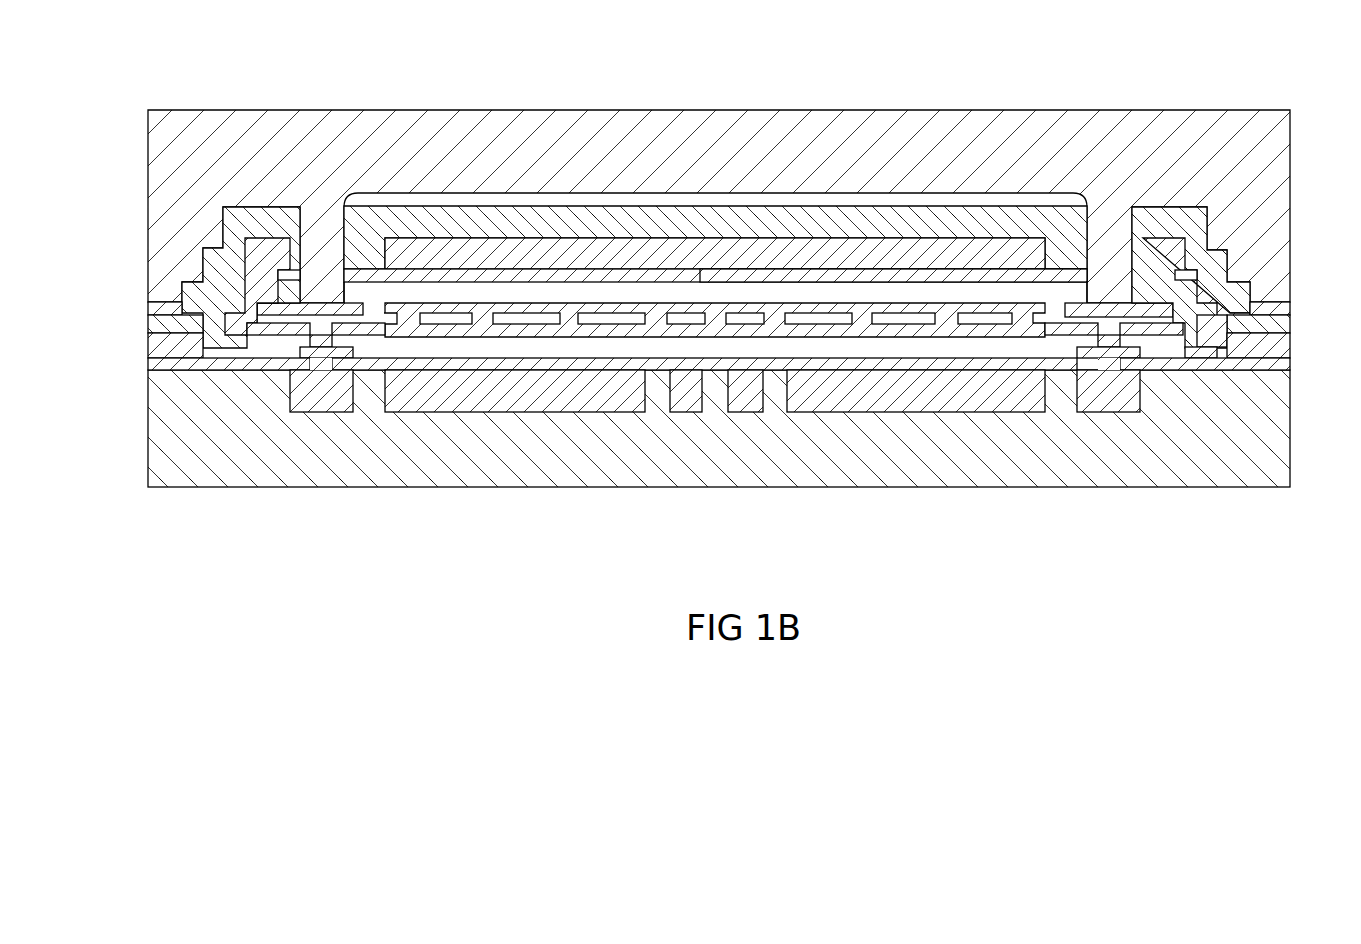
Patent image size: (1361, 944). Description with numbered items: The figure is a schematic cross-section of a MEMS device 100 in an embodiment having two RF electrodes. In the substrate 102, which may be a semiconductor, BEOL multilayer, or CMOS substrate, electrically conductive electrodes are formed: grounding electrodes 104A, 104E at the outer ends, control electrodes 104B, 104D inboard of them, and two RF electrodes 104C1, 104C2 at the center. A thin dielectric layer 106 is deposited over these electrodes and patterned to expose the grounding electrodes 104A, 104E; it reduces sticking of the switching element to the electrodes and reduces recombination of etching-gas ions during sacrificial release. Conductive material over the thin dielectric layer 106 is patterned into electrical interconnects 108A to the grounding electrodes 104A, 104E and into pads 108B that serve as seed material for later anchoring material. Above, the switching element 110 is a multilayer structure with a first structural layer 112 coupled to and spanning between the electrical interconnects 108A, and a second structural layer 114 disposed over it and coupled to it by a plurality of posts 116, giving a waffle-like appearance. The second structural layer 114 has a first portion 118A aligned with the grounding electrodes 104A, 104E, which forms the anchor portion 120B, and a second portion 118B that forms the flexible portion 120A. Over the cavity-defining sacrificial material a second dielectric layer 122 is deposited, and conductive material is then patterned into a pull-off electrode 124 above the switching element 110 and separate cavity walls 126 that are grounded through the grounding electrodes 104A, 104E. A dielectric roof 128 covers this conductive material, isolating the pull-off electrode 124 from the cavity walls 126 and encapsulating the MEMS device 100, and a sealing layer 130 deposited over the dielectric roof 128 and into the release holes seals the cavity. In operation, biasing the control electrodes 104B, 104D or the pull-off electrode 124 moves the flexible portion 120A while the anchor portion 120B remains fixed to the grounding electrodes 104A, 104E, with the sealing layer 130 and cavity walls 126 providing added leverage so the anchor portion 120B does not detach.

The MEMS device 100 is at (130, 103).
The substrate 102 is at (742, 459).
The grounding electrode 104A is at (335, 413).
The control electrode 104B is at (530, 414).
The RF electrode 104C1 is at (688, 413).
The RF electrode 104C2 is at (760, 413).
The control electrode 104D is at (965, 413).
The grounding electrode 104E is at (1110, 413).
The thin dielectric layer 106 is at (150, 366).
The electrical interconnect 108A is at (298, 352).
The pad 108B is at (207, 353).
The switching element 110 is at (750, 298).
The first structural layer 112 is at (830, 330).
The second structural layer 114 is at (568, 304).
The post 116 is at (570, 320).
The first portion 118A is at (345, 300).
The second portion 118B is at (838, 300).
The flexible portion 120A is at (740, 193).
The anchor portion 120B is at (373, 240).
The second dielectric layer 122 is at (1010, 276).
The pull-off electrode 124 is at (540, 247).
The cavity wall 126 is at (238, 295).
The dielectric roof 128 is at (270, 218).
The sealing layer 130 is at (940, 130).